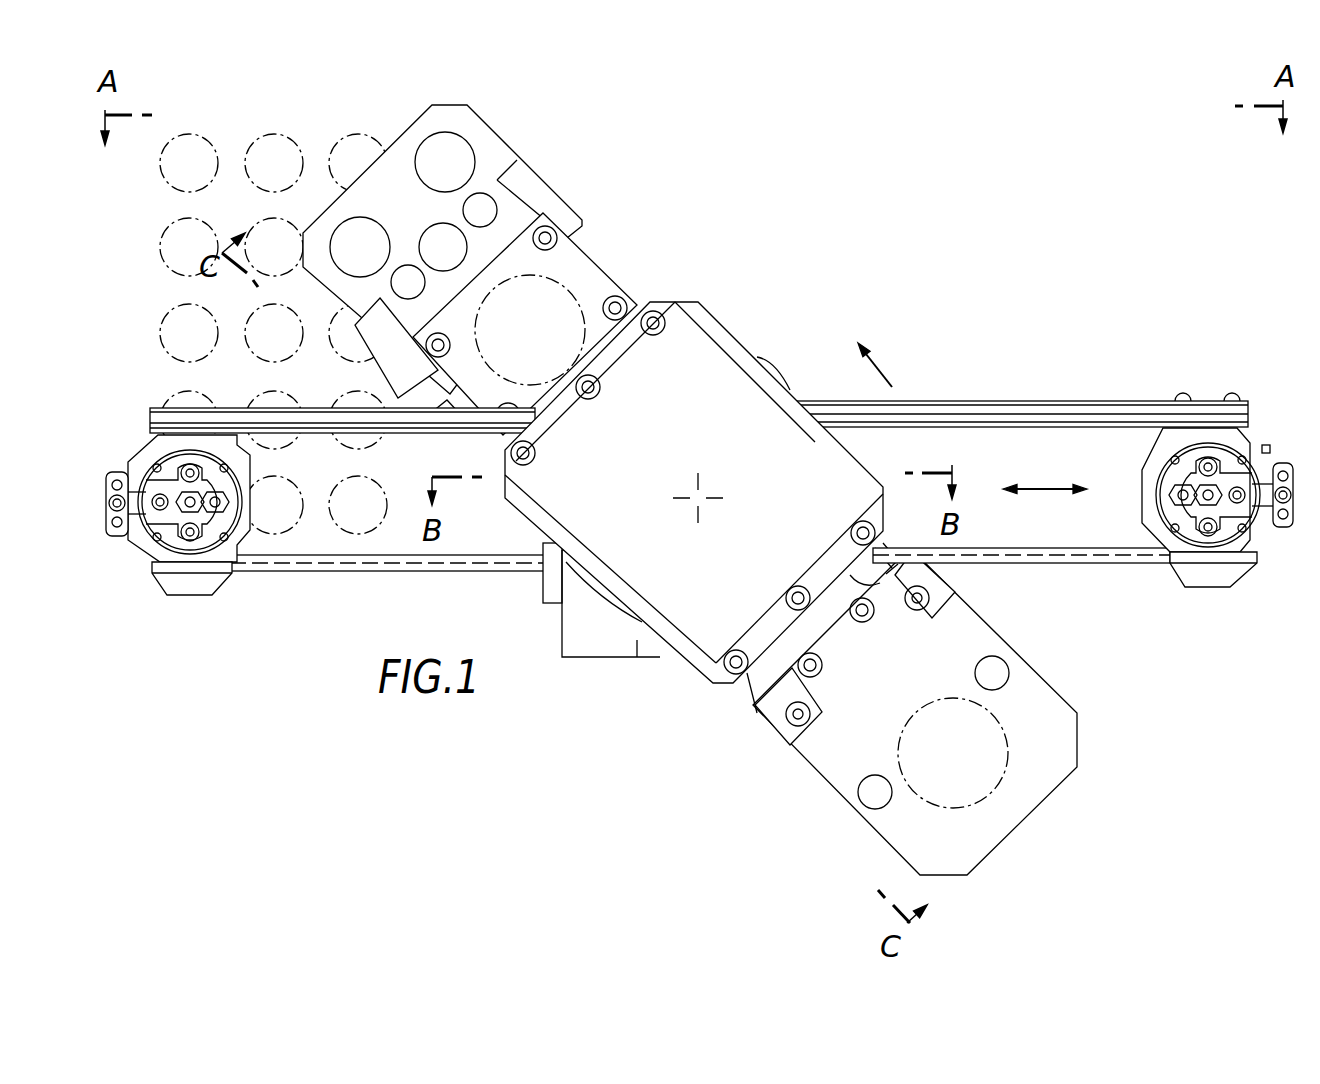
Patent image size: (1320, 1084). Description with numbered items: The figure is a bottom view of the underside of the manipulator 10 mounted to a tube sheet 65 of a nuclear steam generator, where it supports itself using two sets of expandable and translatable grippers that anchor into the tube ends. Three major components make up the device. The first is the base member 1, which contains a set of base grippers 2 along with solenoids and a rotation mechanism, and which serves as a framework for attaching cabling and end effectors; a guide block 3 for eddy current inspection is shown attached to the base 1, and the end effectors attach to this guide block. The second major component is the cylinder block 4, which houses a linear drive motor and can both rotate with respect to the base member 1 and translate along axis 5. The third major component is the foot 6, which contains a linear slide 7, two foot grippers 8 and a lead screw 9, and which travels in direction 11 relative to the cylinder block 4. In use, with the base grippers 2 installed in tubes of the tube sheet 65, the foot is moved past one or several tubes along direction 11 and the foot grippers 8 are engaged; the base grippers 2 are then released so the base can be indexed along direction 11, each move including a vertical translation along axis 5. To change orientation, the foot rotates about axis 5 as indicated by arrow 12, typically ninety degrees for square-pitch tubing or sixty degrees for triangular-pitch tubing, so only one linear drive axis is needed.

The base member 1 is at (646, 272).
The base grippers 2 is at (583, 268).
The guide block 3 is at (485, 128).
The cylinder block 4 is at (548, 603).
The axis 5 is at (705, 496).
The foot 6 is at (966, 375).
The linear slide 7 is at (1070, 401).
The foot grippers 8 is at (192, 597).
The lead screw 9 is at (318, 571).
The manipulator 10 is at (612, 738).
The direction 11 is at (1044, 489).
The arrow 12 is at (880, 364).
The tube sheet 65 is at (306, 118).